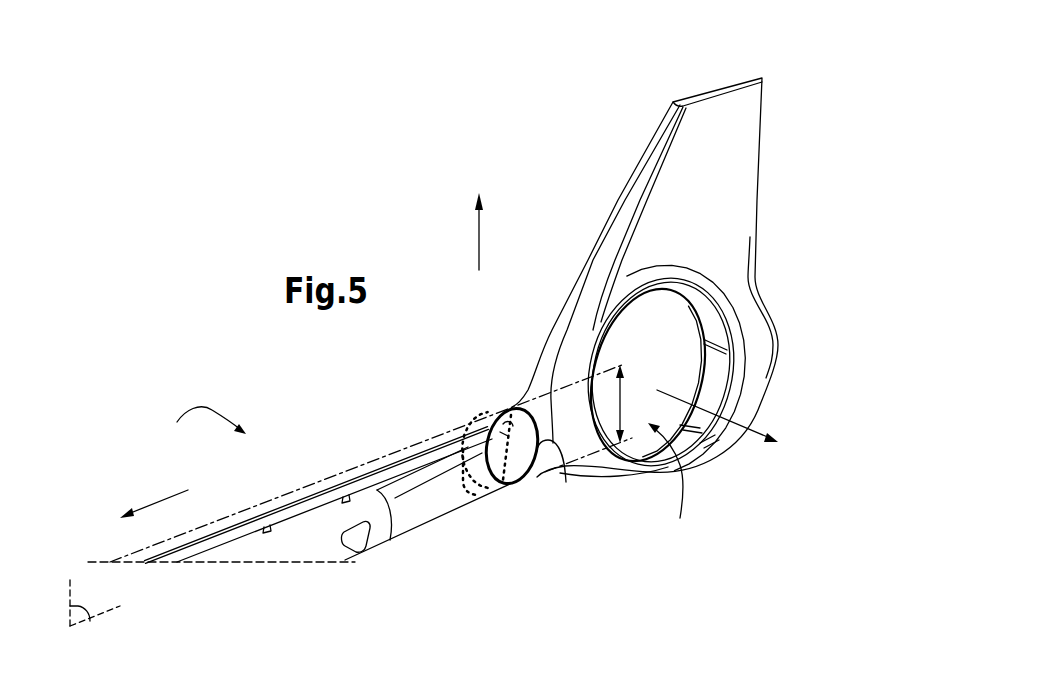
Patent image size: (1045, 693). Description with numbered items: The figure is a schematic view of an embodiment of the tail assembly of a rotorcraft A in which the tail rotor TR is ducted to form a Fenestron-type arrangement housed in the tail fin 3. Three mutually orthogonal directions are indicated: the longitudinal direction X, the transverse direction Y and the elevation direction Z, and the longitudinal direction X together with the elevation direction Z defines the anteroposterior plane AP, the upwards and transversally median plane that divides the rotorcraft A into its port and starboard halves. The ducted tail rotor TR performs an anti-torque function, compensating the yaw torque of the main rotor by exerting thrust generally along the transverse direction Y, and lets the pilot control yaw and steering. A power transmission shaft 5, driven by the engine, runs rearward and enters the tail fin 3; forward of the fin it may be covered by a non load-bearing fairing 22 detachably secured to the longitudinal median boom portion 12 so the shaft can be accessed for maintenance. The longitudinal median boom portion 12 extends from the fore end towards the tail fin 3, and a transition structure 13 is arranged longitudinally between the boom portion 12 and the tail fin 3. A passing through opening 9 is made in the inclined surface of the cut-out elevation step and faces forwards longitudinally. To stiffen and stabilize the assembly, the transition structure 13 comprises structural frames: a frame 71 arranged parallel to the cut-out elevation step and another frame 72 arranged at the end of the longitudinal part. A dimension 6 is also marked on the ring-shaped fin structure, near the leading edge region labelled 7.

The tail fin 3 is at (790, 158).
The power transmission shaft 5 is at (333, 488).
The offset distance 6 is at (593, 418).
The fin leading edge 7 is at (608, 220).
The passing through opening 9 is at (485, 422).
The longitudinal median boom portion 12 is at (413, 510).
The transition structure 13 is at (511, 509).
The non load-bearing fairing 22 is at (298, 488).
The structural frame 71 is at (466, 492).
The structural frame 72 is at (555, 470).
The rotorcraft A is at (200, 420).
The longitudinal direction X is at (153, 499).
The transverse direction Y is at (725, 416).
The elevation direction Z is at (480, 217).
The tail rotor TR is at (672, 482).
The anteroposterior plane AP is at (82, 610).